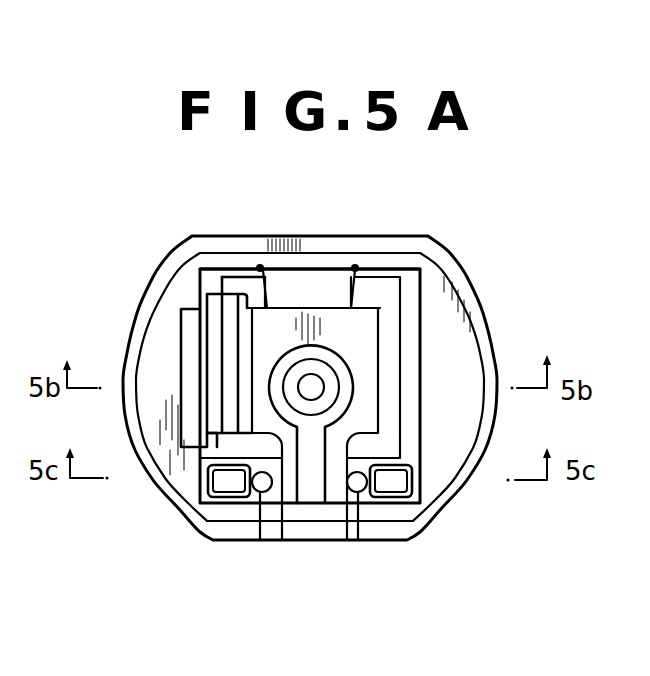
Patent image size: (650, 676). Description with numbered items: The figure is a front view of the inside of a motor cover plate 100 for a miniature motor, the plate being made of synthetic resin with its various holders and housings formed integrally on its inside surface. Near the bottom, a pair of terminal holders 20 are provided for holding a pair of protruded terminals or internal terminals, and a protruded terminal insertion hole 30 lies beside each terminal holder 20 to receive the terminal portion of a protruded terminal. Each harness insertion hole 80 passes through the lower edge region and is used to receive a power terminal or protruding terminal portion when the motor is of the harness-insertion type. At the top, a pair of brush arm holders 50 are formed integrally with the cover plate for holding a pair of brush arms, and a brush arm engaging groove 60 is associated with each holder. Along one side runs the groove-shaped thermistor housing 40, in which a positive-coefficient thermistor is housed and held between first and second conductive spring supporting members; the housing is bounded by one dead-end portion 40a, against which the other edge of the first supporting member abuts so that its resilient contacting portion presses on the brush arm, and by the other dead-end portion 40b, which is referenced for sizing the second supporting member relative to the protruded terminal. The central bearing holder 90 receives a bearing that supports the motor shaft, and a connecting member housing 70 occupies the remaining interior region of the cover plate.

The motor cover plate 100 is at (565, 248).
The connecting member housing 70 is at (420, 350).
The brush arm holder 50 is at (233, 268).
The brush arm engaging groove 60 is at (261, 265).
The thermistor housing 40 is at (205, 358).
The dead-end portion 40a is at (205, 415).
The dead-end portion 40b is at (207, 316).
The bearing holder 90 is at (322, 382).
The protruded terminal insertion hole 30 is at (266, 493).
The terminal holder 20 is at (208, 498).
The harness insertion hole 80 is at (259, 553).